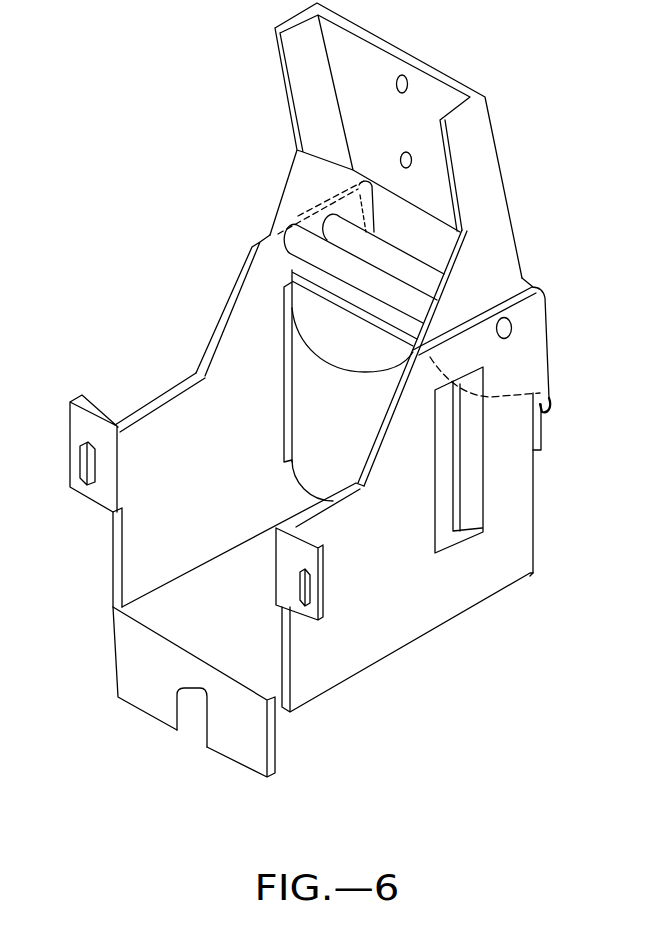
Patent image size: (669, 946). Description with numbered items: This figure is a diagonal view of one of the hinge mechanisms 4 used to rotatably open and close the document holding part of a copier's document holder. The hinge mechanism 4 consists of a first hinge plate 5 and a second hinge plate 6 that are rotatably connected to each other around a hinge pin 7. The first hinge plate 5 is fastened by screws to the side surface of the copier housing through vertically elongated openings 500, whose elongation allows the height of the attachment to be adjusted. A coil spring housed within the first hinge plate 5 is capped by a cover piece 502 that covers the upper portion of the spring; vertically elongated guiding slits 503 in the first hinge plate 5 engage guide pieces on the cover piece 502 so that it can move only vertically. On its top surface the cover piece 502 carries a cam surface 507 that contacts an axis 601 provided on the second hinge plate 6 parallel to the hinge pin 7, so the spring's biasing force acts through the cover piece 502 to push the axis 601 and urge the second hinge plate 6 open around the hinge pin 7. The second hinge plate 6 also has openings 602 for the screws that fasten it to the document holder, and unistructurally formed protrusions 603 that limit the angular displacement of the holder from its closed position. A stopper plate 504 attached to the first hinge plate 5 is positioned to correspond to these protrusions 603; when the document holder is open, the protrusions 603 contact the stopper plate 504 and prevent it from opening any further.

The hinge mechanism 4 is at (548, 275).
The first hinge plate 5 is at (498, 573).
The second hinge plate 6 is at (490, 178).
The hinge pin 7 is at (403, 268).
The vertically elongated openings 500 is at (87, 482).
The cover piece 502 is at (307, 358).
The guiding slits 503 is at (300, 393).
The stopper plate 504 is at (547, 433).
The cam surface 507 is at (472, 482).
The axis 601 is at (293, 238).
The openings 602 is at (412, 155).
The protrusions 603 is at (547, 397).